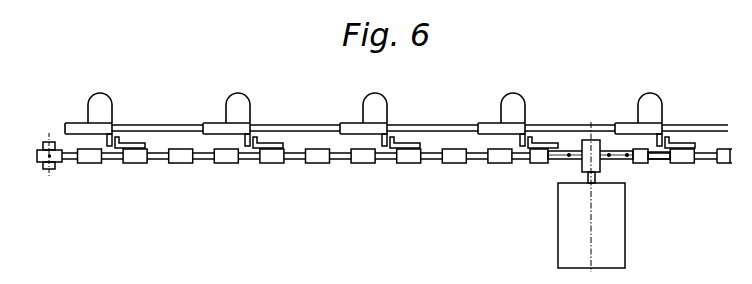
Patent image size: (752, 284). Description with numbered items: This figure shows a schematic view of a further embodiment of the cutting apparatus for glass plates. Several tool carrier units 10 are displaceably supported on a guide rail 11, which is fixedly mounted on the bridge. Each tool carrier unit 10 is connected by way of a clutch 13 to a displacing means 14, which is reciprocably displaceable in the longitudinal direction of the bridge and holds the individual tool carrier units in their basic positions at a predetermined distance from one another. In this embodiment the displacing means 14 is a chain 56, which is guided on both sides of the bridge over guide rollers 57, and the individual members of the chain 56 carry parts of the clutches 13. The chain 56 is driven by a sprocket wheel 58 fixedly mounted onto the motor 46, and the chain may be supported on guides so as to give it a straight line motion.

The tool carrier unit 10 is at (103, 109).
The guide rail 11 is at (429, 123).
The clutch 13 is at (262, 137).
The displacing means 14 is at (183, 165).
The motor 46 is at (568, 225).
The chain 56 is at (658, 162).
The guide roller 57 is at (58, 163).
The sprocket wheel 58 is at (561, 152).